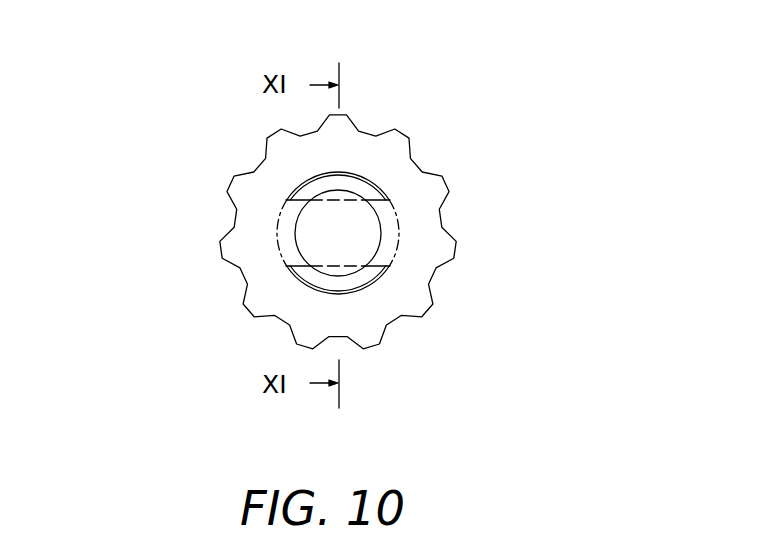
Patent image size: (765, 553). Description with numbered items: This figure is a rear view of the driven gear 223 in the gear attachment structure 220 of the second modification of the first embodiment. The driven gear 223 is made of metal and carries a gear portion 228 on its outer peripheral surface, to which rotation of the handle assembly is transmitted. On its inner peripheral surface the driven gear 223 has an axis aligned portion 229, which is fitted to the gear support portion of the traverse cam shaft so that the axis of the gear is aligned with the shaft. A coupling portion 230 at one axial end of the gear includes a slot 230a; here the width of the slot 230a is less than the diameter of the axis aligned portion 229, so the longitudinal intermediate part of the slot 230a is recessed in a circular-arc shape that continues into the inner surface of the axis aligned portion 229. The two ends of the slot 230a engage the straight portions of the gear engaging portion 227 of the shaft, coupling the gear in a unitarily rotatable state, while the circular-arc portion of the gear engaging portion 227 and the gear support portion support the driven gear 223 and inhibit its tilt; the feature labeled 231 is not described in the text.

The gear attachment structure 220 is at (573, 122).
The driven gear 223 is at (463, 138).
The gear engaging portion 227 is at (285, 222).
The gear portion 228 is at (402, 133).
The axis aligned portion 229 is at (369, 203).
The coupling portion 230 is at (377, 262).
The slot 230a is at (386, 228).
The flange portion 231 is at (300, 182).